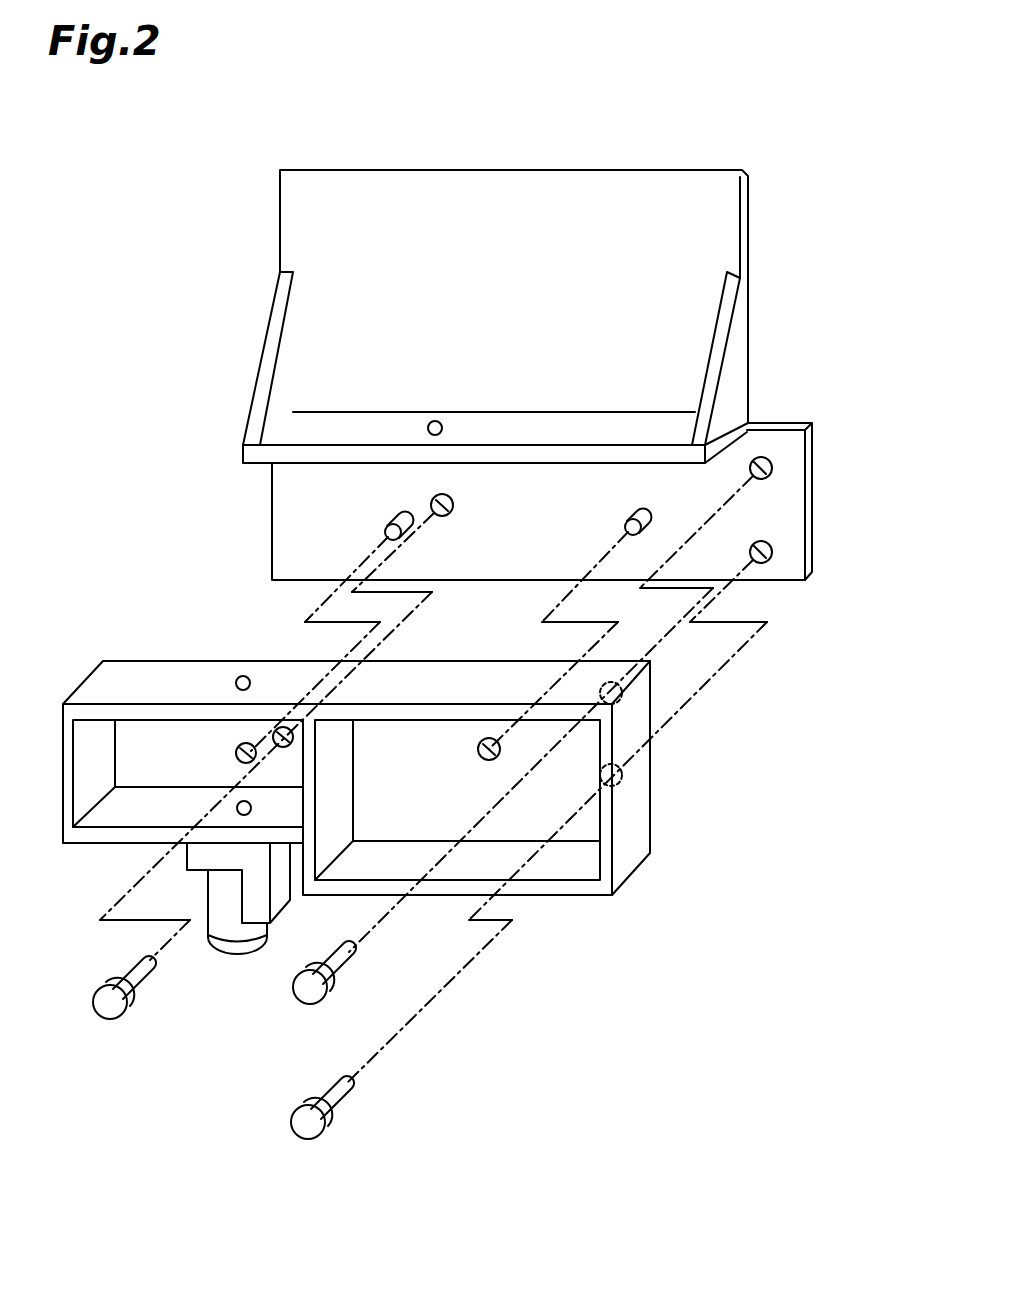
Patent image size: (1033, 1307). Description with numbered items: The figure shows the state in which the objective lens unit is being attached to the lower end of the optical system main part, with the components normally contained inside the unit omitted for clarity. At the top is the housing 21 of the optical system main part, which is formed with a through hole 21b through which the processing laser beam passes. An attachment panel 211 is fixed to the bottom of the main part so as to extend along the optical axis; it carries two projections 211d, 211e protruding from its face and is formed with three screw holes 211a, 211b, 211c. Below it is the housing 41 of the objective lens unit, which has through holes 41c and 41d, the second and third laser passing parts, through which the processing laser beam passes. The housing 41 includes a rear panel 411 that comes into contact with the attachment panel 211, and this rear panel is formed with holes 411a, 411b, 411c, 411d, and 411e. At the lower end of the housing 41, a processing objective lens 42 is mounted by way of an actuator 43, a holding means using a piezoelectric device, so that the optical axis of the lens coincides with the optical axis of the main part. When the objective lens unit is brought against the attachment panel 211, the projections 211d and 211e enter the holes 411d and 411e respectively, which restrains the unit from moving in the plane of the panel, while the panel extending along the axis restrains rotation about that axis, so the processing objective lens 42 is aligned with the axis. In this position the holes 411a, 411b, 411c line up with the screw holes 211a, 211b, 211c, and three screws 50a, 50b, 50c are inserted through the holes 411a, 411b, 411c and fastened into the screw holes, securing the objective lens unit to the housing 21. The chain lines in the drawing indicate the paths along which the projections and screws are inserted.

The housing 21 is at (515, 167).
The through hole 21b is at (438, 421).
The attachment panel 211 is at (790, 452).
The screw hole 211a is at (767, 562).
The screw hole 211b is at (763, 457).
The screw hole 211c is at (441, 518).
The projection 211d is at (384, 532).
The projection 211e is at (631, 538).
The housing 41 is at (371, 807).
The through hole 41c is at (237, 679).
The through hole 41d is at (237, 808).
The rear panel 411 is at (578, 824).
The hole 411a is at (621, 782).
The hole 411b is at (621, 701).
The hole 411c is at (281, 728).
The hole 411d is at (240, 746).
The hole 411e is at (484, 741).
The processing objective lens 42 is at (218, 955).
The actuator 43 is at (283, 898).
The screw 50a is at (305, 1128).
The screw 50b is at (310, 993).
The screw 50c is at (106, 1008).